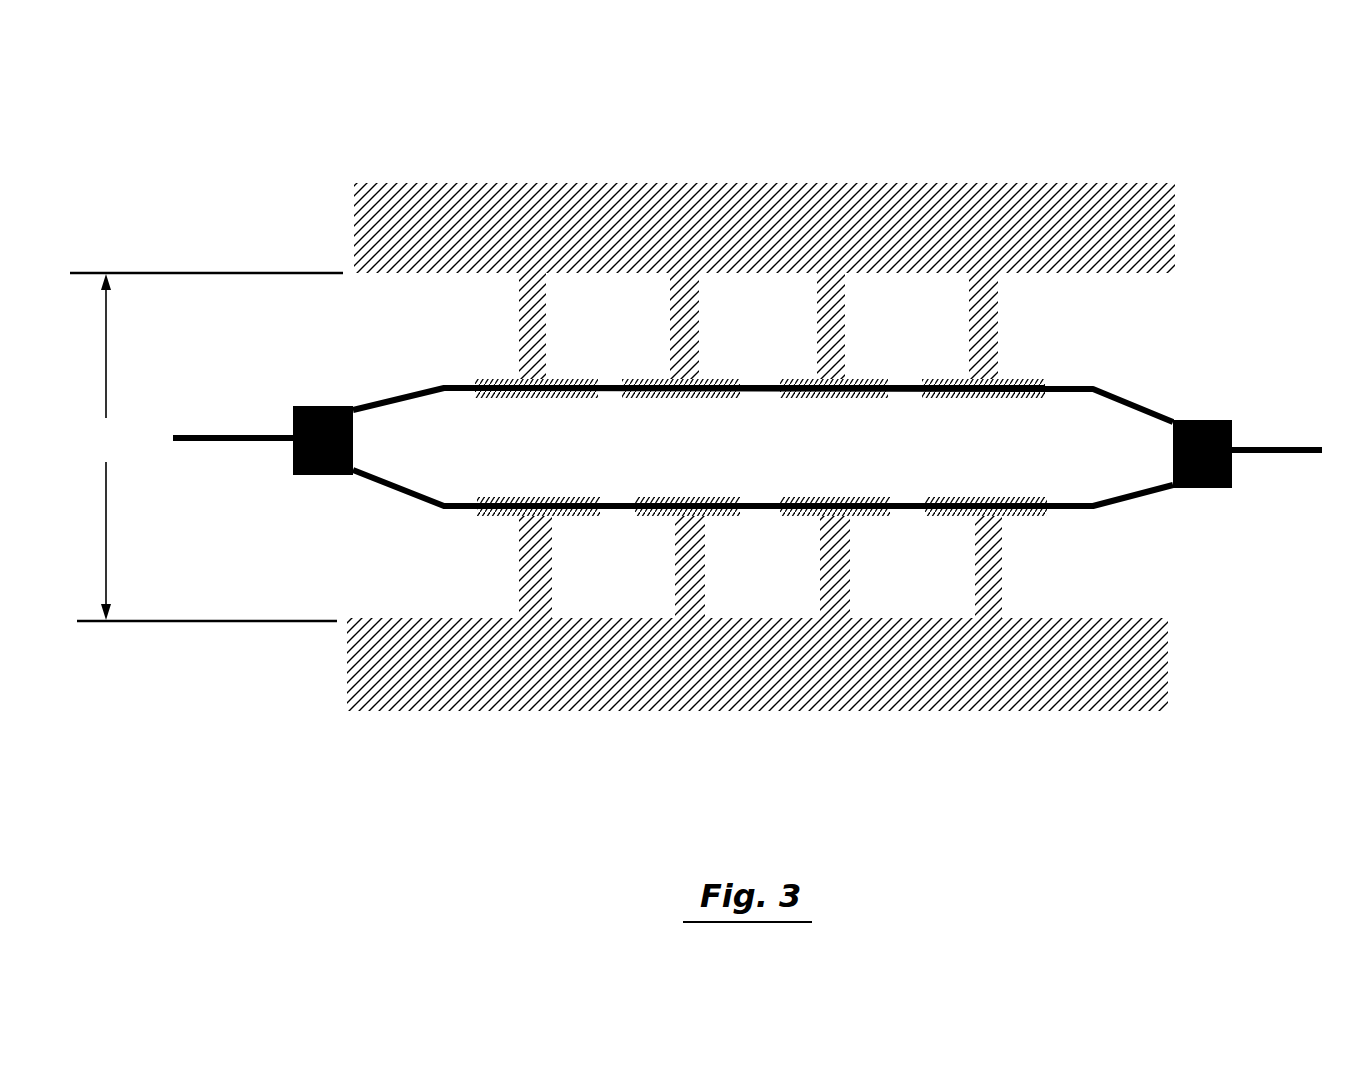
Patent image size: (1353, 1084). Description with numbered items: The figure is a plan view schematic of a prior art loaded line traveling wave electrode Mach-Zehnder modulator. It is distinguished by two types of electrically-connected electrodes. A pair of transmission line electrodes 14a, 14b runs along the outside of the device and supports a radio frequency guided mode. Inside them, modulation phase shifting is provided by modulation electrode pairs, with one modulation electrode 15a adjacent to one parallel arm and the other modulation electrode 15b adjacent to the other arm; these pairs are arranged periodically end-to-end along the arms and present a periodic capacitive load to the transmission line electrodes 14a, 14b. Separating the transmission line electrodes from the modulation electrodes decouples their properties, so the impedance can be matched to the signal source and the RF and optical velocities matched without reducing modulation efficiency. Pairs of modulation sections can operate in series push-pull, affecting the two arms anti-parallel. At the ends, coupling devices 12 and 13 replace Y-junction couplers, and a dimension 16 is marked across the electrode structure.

The coupling device 12 is at (320, 405).
The coupling device 13 is at (1198, 420).
The transmission line electrode 14a is at (715, 182).
The transmission line electrode 14b is at (698, 721).
The modulation electrode 15a is at (1029, 380).
The modulation electrode 15b is at (1029, 518).
The mold gap height 16 is at (206, 447).